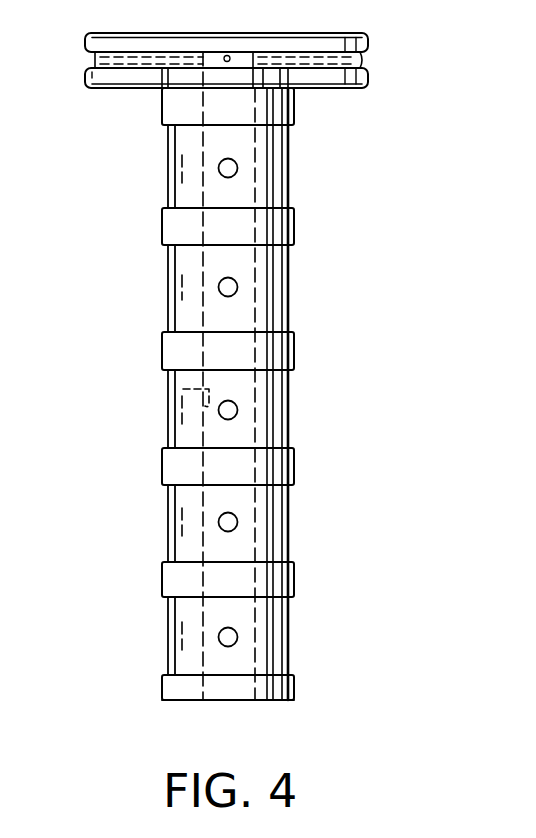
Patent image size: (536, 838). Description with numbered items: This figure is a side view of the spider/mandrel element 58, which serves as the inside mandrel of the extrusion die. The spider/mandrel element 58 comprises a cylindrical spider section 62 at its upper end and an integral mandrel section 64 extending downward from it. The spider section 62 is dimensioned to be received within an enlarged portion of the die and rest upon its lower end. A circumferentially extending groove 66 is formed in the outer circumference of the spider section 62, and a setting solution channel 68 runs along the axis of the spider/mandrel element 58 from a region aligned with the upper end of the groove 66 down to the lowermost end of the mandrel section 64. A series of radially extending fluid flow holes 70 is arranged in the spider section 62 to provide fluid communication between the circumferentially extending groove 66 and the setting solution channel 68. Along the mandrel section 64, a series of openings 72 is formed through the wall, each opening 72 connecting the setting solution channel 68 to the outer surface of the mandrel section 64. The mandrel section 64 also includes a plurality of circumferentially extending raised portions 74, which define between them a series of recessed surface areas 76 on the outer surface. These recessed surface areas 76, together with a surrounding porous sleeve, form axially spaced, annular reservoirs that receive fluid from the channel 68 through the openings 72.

The spider/mandrel element 58 is at (360, 221).
The spider section 62 is at (98, 42).
The mandrel section 64 is at (275, 700).
The circumferentially extending groove 66 is at (360, 64).
The setting solution channel 68 is at (180, 400).
The radially extending fluid flow holes 70 is at (227, 55).
The openings 72 is at (218, 168).
The circumferentially extending raised portions 74 is at (172, 112).
The recessed surface areas 76 is at (290, 180).